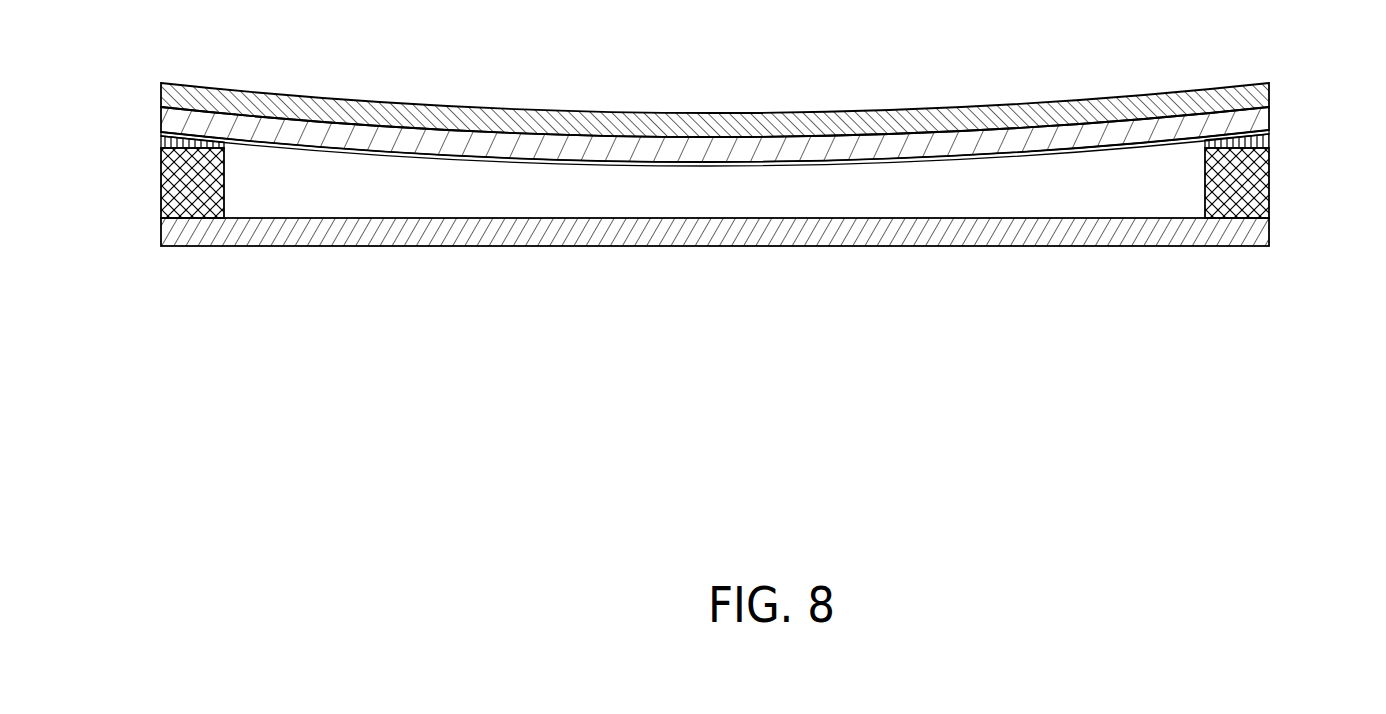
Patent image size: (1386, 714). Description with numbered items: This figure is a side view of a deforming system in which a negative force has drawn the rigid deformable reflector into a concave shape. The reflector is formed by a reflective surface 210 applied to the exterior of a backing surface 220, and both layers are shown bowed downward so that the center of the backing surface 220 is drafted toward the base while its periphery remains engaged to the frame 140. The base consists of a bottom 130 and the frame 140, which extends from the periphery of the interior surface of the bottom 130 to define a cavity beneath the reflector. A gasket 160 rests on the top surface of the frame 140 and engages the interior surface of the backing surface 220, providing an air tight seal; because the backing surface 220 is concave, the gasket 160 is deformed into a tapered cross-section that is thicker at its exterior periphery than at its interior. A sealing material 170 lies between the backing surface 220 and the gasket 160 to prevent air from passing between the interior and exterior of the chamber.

The reflective surface 210 is at (1213, 97).
The backing surface 220 is at (1252, 118).
The sealing material 170 is at (1268, 132).
The gasket 160 is at (1255, 139).
The frame 140 is at (1269, 188).
The bottom 130 is at (1127, 238).